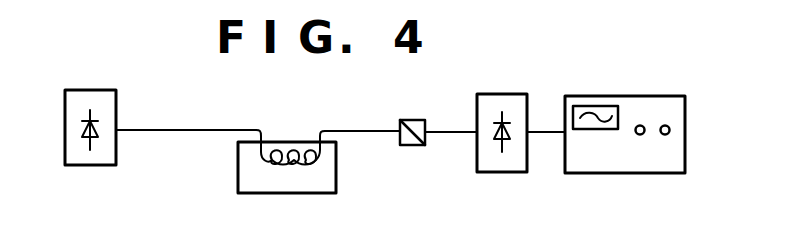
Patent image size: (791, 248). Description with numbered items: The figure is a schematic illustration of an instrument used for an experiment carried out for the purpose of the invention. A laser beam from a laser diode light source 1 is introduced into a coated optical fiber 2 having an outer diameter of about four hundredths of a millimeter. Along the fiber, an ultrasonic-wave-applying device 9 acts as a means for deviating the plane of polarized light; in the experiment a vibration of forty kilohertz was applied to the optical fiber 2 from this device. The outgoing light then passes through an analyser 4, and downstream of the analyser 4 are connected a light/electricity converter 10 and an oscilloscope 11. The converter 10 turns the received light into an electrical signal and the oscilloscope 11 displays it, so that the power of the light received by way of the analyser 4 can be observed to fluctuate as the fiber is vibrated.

The light source 1 is at (117, 96).
The optical fiber 2 is at (186, 129).
The analyser 4 is at (419, 119).
The ultrasonic-wave-applying device 9 is at (238, 170).
The light/electricity converter 10 is at (508, 94).
The oscilloscope 11 is at (637, 95).